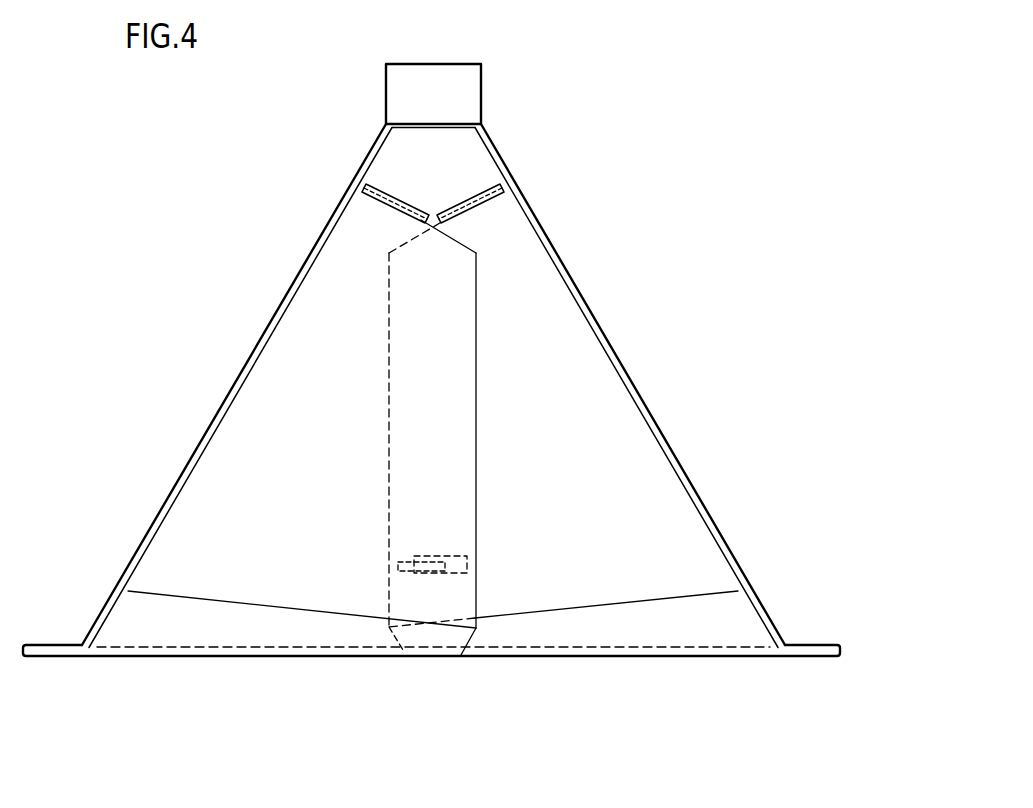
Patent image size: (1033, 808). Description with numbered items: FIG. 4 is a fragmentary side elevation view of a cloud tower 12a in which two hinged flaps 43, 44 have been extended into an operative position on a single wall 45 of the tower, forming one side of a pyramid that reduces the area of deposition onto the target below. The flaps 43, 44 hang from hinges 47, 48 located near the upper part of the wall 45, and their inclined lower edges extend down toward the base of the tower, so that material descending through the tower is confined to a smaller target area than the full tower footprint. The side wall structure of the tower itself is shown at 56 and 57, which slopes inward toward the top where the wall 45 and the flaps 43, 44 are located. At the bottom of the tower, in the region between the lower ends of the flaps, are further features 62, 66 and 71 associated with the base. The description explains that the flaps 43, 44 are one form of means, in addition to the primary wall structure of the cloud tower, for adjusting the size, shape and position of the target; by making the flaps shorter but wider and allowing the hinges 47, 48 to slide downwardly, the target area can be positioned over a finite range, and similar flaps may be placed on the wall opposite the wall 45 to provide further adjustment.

The sorting apparatus 12a is at (598, 188).
The wall 45 is at (446, 171).
The right deflector plate 47 is at (487, 203).
The left deflector plate 48 is at (383, 205).
The right side wall 56 is at (640, 395).
The left side wall 57 is at (228, 395).
The flap 44 is at (316, 496).
The flap 43 is at (558, 496).
The left sensor 71 is at (405, 567).
The outlet 66 is at (433, 573).
The right sensor 62 is at (446, 567).